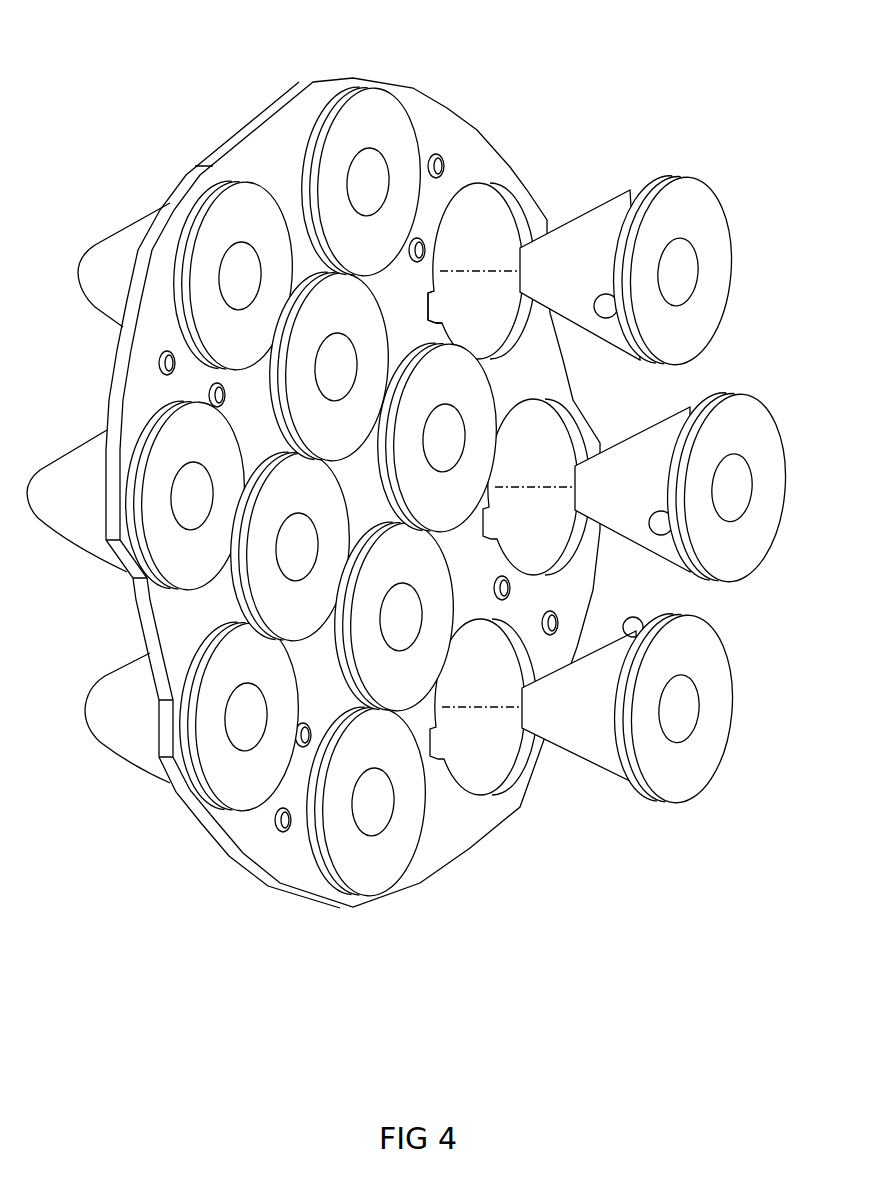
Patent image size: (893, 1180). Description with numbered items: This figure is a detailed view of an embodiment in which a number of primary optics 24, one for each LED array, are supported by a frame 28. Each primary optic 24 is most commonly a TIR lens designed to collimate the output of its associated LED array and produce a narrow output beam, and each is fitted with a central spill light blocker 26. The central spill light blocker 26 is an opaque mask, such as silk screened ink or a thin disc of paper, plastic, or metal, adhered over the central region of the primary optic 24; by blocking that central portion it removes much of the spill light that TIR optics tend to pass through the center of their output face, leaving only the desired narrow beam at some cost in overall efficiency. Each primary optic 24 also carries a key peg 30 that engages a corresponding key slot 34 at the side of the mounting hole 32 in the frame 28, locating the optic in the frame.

The primary optics 24 is at (652, 235).
The central spill light blocker 26 is at (680, 287).
The frame 28 is at (453, 828).
The key peg 30 is at (607, 294).
The mounting hole 32 is at (505, 185).
The key slot 34 is at (437, 300).